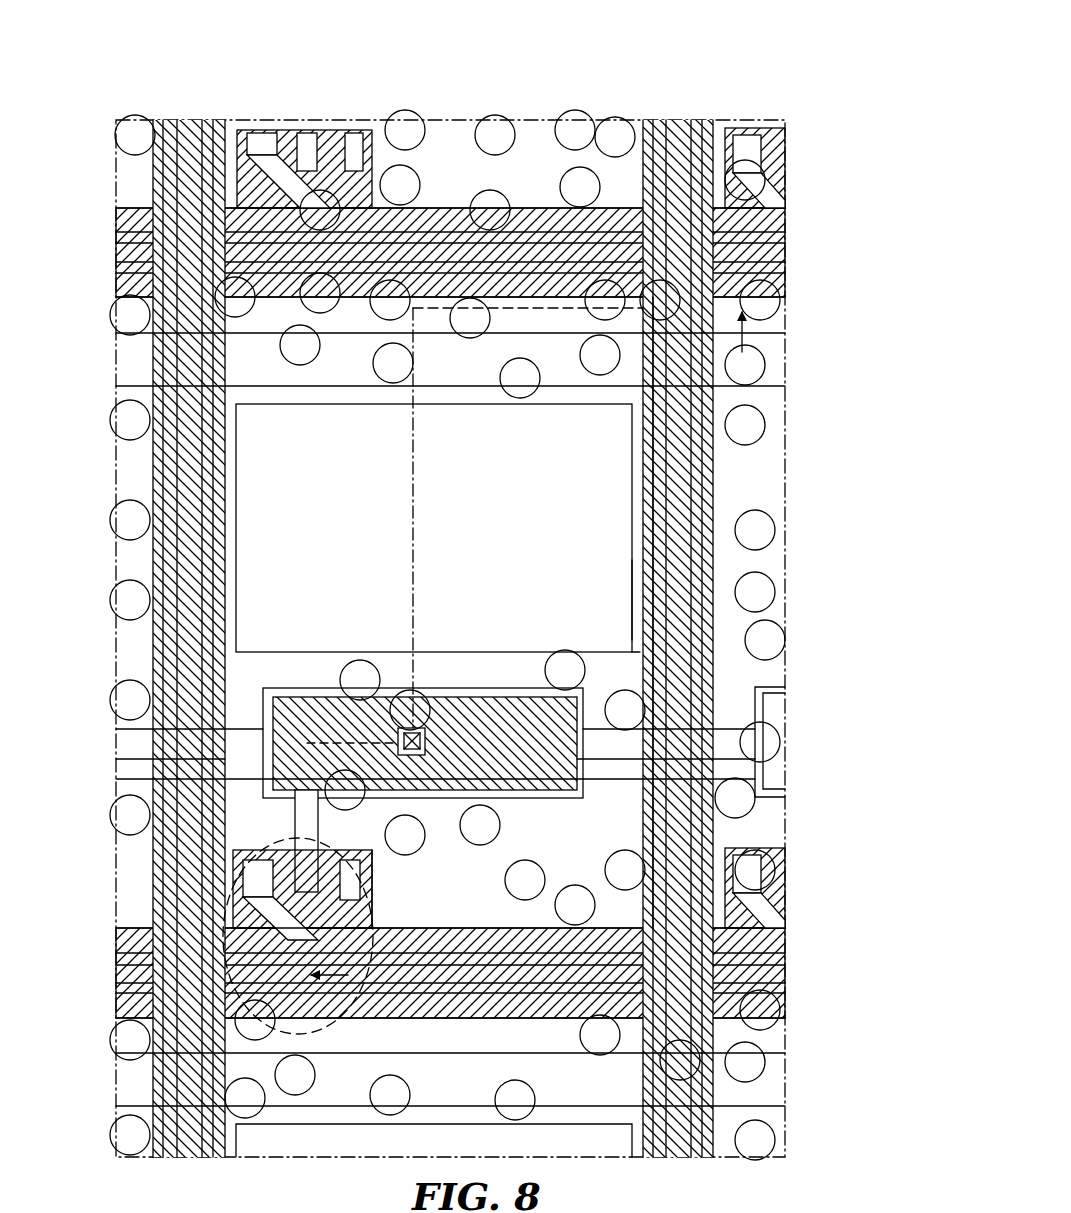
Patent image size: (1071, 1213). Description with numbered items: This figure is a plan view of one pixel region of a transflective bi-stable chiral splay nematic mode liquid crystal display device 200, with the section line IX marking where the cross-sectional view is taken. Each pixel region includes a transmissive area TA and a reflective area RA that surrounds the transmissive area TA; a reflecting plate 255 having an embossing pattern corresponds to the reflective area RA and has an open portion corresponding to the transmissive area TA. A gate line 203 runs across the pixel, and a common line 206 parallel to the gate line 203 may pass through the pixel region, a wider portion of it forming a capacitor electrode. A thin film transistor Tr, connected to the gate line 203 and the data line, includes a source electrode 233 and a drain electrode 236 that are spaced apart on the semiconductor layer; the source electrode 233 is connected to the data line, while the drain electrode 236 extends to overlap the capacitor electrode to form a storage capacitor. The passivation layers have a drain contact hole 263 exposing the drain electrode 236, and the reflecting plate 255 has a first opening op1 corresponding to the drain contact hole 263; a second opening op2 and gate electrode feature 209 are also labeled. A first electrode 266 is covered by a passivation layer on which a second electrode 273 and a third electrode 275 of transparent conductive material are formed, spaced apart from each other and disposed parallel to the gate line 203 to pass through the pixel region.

The transflective bi-stable chiral splay nematic mode liquid crystal display device 200 is at (731, 86).
The gate line 203 is at (118, 940).
The common line 206 is at (135, 738).
The gate electrode 209 is at (375, 921).
The source electrode 233 is at (372, 899).
The drain electrode 236 is at (418, 589).
The reflecting plate 255 is at (670, 408).
The drain contact hole 263 is at (404, 733).
The first electrode 266 is at (657, 453).
The second electrode 273 is at (770, 802).
The third electrode 275 is at (764, 353).
The transmissive area TA is at (608, 527).
The reflective area RA is at (617, 669).
The first opening op1 is at (423, 725).
The second opening op2 is at (633, 584).
The line IX- IX is at (527, 649).
The thin film transistor Tr is at (298, 944).